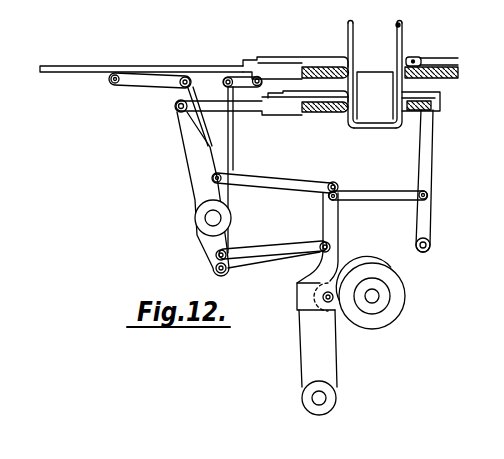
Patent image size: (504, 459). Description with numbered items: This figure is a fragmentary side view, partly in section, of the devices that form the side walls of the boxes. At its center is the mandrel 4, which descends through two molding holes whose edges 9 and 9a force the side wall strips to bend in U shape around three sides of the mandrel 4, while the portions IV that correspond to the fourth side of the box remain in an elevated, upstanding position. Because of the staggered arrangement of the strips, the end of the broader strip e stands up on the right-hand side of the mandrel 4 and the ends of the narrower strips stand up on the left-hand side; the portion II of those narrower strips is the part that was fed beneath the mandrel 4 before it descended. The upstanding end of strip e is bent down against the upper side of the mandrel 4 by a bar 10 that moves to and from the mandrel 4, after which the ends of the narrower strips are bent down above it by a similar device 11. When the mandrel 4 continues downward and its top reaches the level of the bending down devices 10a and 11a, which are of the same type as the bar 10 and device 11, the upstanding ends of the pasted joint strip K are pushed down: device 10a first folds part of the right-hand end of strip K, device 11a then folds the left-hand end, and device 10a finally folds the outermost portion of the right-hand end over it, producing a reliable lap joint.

The edge of molding hole 9 is at (343, 59).
The edge of molding hole 9a is at (338, 111).
The bar 10 is at (419, 60).
The bending down device 10a is at (442, 97).
The bending device 11 is at (305, 58).
The bending down device 11a is at (290, 91).
The mandrel 4 is at (380, 108).
The strip e is at (397, 24).
The joint strip K is at (367, 128).
The strip portion II is at (397, 121).
The strip portions IV is at (400, 58).